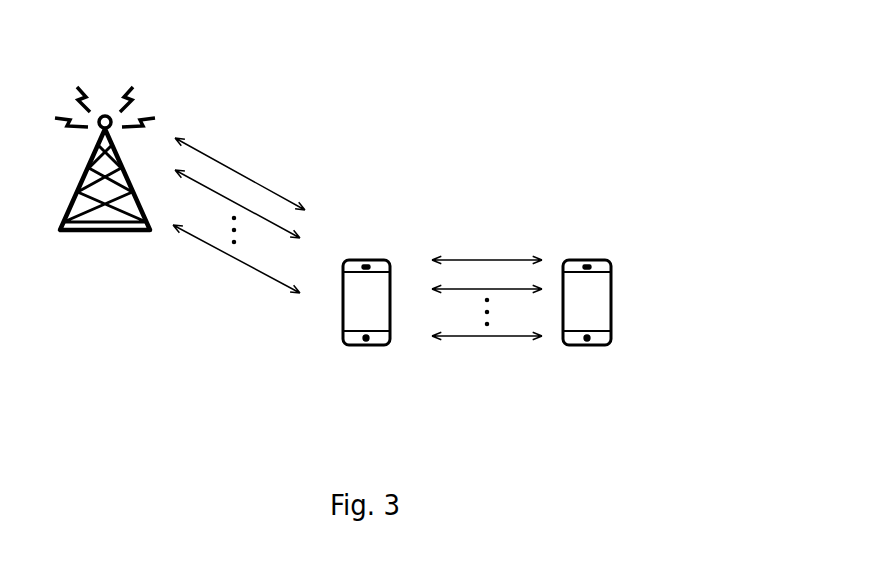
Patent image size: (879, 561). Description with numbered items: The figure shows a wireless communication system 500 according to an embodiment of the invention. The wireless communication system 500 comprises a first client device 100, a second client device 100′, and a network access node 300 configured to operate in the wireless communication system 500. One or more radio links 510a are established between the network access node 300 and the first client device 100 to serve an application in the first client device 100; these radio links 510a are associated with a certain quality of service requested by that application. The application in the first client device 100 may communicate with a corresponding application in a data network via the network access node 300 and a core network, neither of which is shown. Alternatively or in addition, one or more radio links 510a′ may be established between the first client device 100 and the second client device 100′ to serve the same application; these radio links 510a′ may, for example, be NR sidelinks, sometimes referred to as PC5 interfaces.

The wireless communication system 500 is at (572, 47).
The network access node 300 is at (95, 232).
The radio link 510a is at (323, 205).
The first client device 100 is at (357, 345).
The radio link 510a′ is at (541, 273).
The second client device 100′ is at (578, 345).